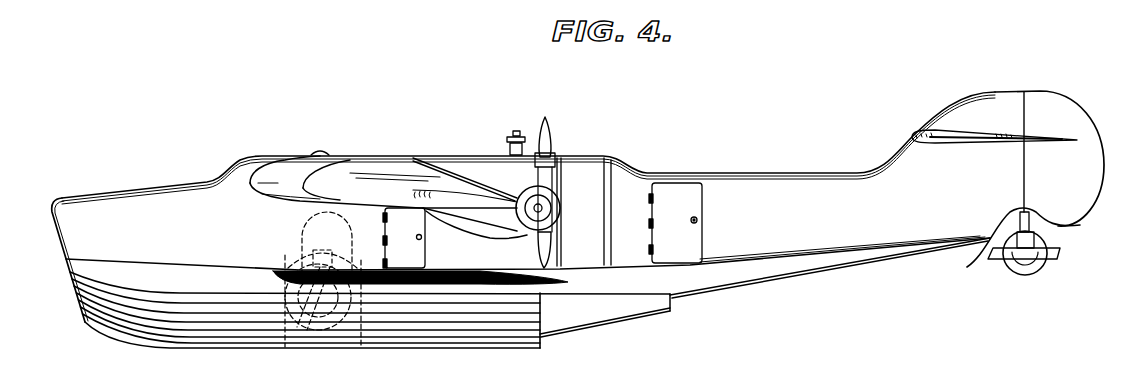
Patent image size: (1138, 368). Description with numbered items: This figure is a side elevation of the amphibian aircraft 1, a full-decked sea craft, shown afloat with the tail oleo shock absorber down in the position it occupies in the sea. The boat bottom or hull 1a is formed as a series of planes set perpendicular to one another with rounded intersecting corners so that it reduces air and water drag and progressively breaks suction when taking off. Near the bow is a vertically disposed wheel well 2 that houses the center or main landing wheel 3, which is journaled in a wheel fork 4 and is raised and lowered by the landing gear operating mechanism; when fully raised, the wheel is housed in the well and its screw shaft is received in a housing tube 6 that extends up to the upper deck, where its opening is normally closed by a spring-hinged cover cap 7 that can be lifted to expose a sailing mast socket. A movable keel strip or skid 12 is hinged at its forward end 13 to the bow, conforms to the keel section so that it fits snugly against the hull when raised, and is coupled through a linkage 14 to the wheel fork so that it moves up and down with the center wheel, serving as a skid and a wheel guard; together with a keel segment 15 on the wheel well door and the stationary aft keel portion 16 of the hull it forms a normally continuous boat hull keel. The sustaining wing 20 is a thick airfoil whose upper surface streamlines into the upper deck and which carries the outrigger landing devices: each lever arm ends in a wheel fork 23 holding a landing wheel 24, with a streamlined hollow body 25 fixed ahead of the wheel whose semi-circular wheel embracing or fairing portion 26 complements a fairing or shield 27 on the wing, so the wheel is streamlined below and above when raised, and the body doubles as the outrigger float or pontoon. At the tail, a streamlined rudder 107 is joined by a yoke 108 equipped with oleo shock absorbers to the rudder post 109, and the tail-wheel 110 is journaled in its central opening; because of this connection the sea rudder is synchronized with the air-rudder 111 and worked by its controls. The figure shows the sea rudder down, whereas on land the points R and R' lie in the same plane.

The amphibian aircraft 1 is at (165, 183).
The boat bottom or hull 1a is at (137, 285).
The wheel well 2 is at (290, 264).
The center or main landing wheel 3 is at (357, 260).
The wheel fork 4 is at (292, 285).
The housing tube 6 is at (320, 210).
The spring-hinged cover cap 7 is at (323, 154).
The movable keel strip or skid 12 is at (190, 343).
The forward end 13 is at (85, 318).
The linkage 14 is at (295, 345).
The keel segment 15 is at (333, 347).
The stationary aft keel portion 16 is at (486, 346).
The sustaining wing 20 is at (374, 161).
The wheel fork 23 is at (549, 200).
The landing wheel 24 is at (561, 207).
The streamlined hollow body 25 is at (490, 228).
The wheel embracing or fairing portion 26 is at (532, 236).
The fairing or shield 27 is at (510, 186).
The streamlined rudder 107 is at (1057, 259).
The yoke 108 is at (1035, 237).
The rudder post 109 is at (1032, 213).
The tail-wheel 110 is at (1032, 272).
The air-rudder 111 is at (1093, 168).
The point R is at (1012, 244).
The point R' is at (1002, 272).